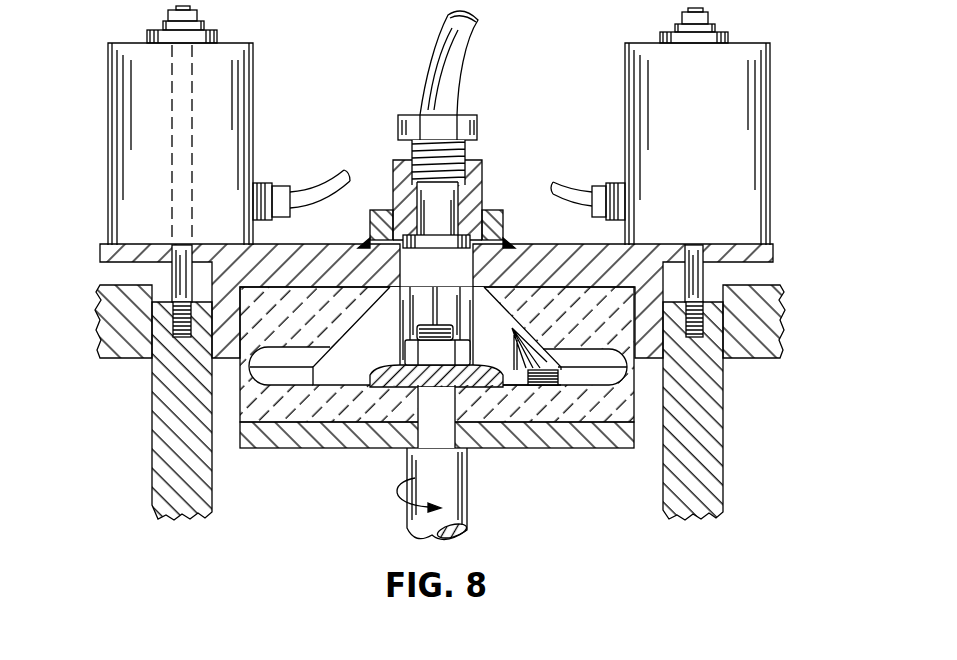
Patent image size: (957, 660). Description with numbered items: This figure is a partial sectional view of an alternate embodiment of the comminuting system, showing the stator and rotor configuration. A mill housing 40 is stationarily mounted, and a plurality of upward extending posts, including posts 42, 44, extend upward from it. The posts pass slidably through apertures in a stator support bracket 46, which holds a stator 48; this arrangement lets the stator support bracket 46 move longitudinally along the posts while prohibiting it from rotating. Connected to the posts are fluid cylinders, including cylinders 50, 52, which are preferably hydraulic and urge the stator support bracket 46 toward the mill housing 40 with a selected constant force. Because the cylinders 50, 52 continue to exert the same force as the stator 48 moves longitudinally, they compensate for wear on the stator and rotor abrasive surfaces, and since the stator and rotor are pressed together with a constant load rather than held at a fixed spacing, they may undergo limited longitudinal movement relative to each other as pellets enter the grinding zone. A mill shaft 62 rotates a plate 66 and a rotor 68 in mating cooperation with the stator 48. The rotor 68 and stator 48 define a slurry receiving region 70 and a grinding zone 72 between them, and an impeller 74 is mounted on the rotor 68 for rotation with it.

The mill housing 40 is at (708, 443).
The post 42 is at (697, 290).
The post 44 is at (176, 283).
The stator support bracket 46 is at (307, 260).
The stator 48 is at (563, 295).
The fluid cylinder 50 is at (745, 47).
The fluid cylinder 52 is at (230, 50).
The mill shaft 62 is at (447, 475).
The plate 66 is at (350, 440).
The rotor 68 is at (268, 400).
The slurry receiving region 70 is at (483, 205).
The grinding zone 72 is at (250, 363).
The impeller 74 is at (355, 315).